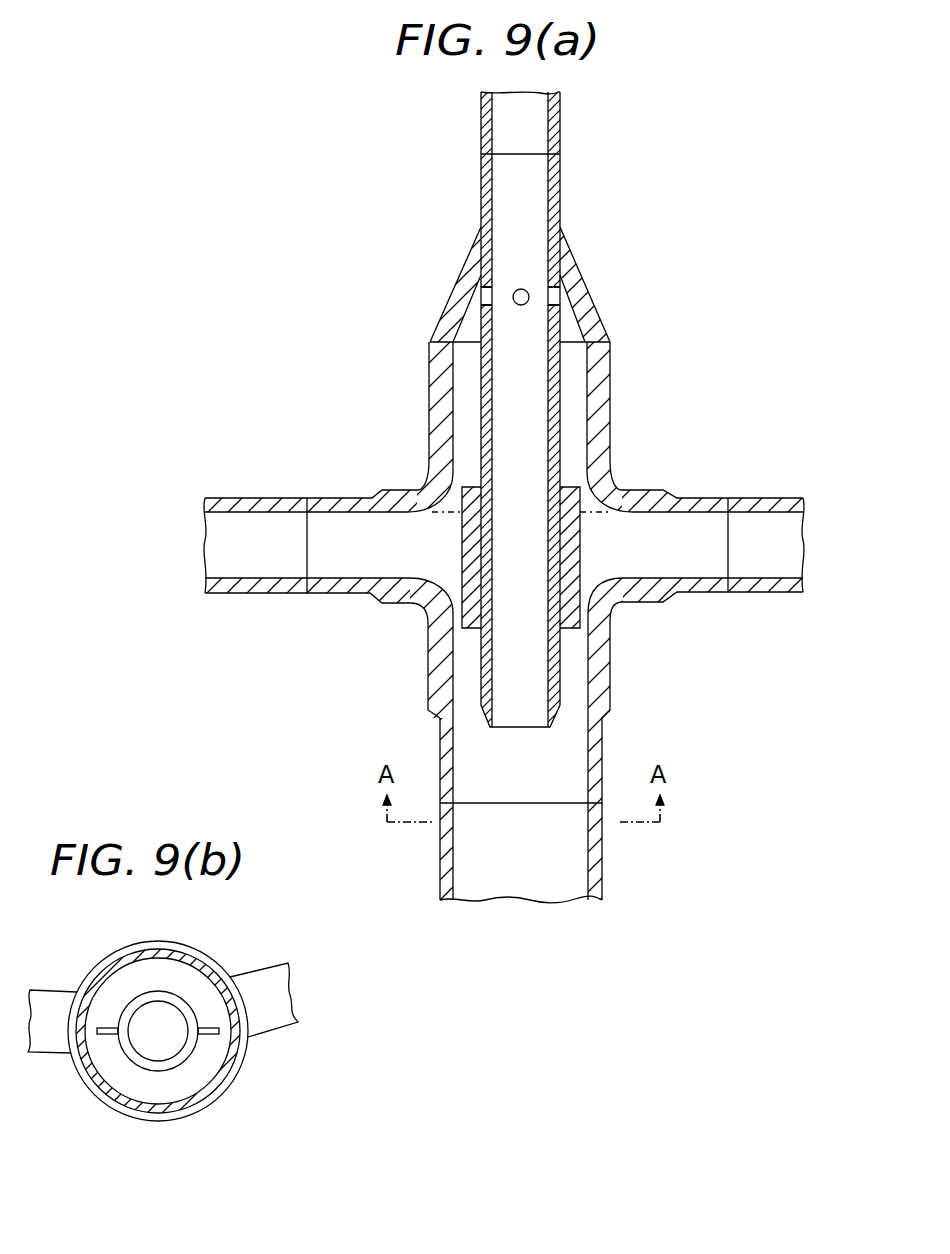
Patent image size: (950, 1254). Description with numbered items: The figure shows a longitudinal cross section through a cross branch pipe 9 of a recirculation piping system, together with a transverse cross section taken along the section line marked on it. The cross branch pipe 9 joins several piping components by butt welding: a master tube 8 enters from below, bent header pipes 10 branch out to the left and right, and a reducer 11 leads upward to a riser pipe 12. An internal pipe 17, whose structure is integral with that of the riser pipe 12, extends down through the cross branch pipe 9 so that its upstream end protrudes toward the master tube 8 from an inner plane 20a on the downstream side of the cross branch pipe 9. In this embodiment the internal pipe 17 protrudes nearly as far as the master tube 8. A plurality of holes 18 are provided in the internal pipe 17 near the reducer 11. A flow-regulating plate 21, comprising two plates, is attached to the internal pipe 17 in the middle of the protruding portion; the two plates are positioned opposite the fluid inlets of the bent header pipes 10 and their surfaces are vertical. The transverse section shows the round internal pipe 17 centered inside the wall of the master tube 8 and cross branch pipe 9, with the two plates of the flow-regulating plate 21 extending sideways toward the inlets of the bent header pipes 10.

In FIG. 9A, the master tube 8 is at (593, 863).
In FIG. 9B, the master tube 8 is at (175, 1103).
In FIG. 9A, the cross branch pipe 9 is at (600, 652).
In FIG. 9B, the cross branch pipe 9 is at (230, 1080).
In FIG. 9A, the bent header pipes 10 is at (258, 505).
In FIG. 9B, the bent header pipes 10 is at (47, 998).
In FIG. 9A, the reducer 11 is at (468, 273).
In FIG. 9A, the riser pipe 12 is at (557, 127).
In FIG. 9A, the internal pipe 17 is at (556, 422).
In FIG. 9B, the internal pipe 17 is at (178, 1002).
In FIG. 9A, the holes 18 is at (557, 298).
In FIG. 9A, the inner plane 20a is at (447, 513).
In FIG. 9A, the flow-regulating plate 21 is at (568, 537).
In FIG. 9B, the flow-regulating plate 21 is at (108, 1036).